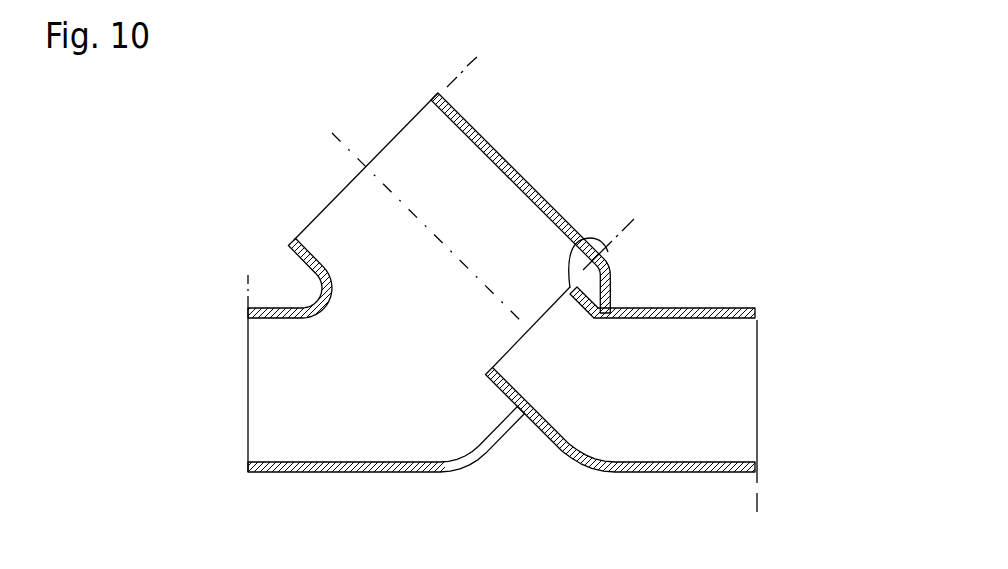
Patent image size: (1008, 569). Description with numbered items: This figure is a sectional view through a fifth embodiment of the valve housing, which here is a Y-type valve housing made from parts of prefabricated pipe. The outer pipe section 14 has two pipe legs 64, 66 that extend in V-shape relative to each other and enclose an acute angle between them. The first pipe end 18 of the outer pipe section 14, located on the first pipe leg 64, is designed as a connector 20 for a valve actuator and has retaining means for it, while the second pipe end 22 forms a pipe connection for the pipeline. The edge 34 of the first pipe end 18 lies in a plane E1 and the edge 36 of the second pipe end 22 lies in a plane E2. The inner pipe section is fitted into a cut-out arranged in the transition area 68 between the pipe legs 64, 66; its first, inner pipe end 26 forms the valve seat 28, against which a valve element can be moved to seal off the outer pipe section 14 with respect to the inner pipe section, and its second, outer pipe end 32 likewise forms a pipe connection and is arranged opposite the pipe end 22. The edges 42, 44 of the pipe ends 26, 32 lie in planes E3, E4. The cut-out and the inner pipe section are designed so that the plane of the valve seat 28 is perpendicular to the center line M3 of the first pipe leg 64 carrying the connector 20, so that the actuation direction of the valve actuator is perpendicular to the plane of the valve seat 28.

The outer pipe section 14 is at (655, 473).
The first pipe end 18 is at (470, 123).
The connector 20 is at (378, 133).
The second pipe end 22 is at (267, 472).
The first, inner pipe end 26 is at (593, 300).
The valve seat 28 is at (500, 358).
The second, outer pipe end 32 is at (740, 309).
The edge 34 is at (247, 468).
The edge 36 is at (290, 238).
The edge 42 is at (754, 313).
The edge 44 is at (590, 243).
The first pipe leg 64 is at (532, 190).
The second pipe leg 66 is at (355, 472).
The transition area 68 is at (501, 433).
The plane E1 is at (247, 300).
The plane E2 is at (453, 77).
The plane E3 is at (757, 500).
The plane E4 is at (652, 208).
The center line M3 is at (313, 117).